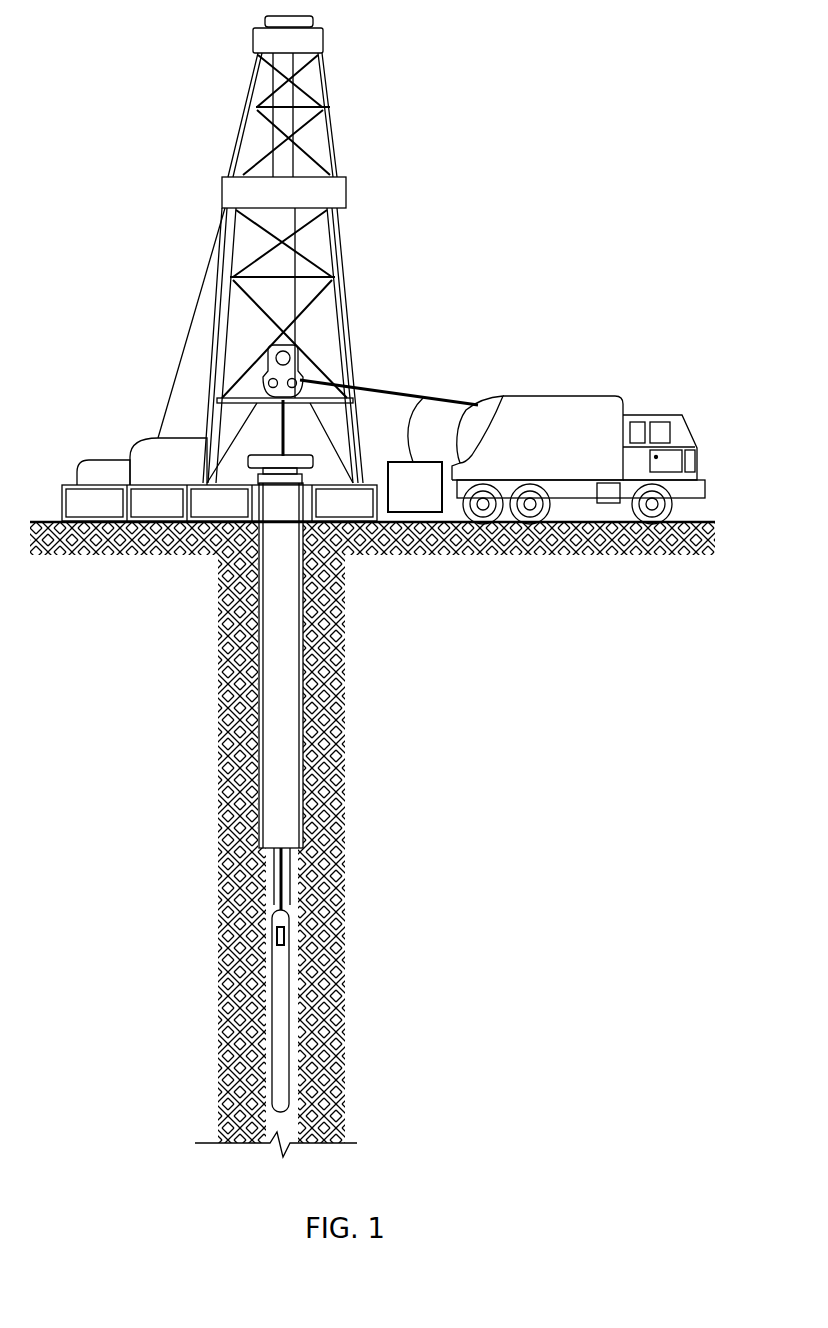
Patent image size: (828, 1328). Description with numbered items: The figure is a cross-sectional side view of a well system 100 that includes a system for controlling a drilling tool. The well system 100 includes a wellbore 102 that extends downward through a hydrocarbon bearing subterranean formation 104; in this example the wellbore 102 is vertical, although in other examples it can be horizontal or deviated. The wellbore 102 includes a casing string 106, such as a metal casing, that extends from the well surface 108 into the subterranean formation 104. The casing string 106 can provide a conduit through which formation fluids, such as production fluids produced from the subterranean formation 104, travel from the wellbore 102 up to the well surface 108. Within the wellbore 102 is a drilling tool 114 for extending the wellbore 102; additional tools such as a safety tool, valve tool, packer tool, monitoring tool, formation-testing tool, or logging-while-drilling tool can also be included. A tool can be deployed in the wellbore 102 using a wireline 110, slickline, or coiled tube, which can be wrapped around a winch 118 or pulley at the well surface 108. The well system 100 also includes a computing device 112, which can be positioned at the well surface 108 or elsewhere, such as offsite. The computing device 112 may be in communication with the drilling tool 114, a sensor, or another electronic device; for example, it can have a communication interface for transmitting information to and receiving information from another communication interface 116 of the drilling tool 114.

The well system 100 is at (517, 201).
The wellbore 102 is at (300, 755).
The subterranean formation 104 is at (351, 658).
The casing string 106 is at (266, 768).
The well surface 108 is at (311, 455).
The wireline 110 is at (398, 382).
The computing device 112 is at (434, 501).
The drilling tool 114 is at (302, 905).
The communication interface 116 is at (285, 933).
The winch 118 is at (298, 350).